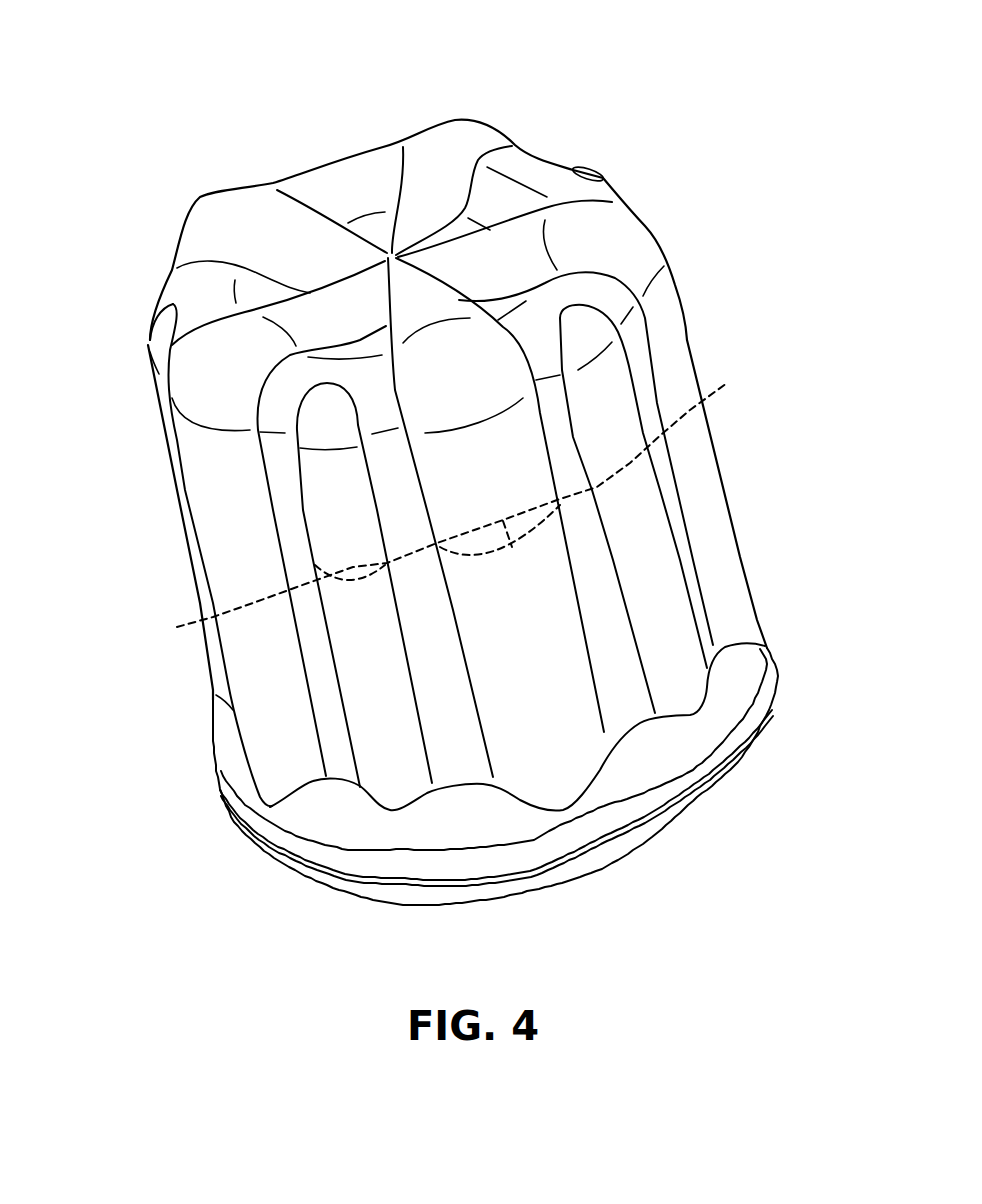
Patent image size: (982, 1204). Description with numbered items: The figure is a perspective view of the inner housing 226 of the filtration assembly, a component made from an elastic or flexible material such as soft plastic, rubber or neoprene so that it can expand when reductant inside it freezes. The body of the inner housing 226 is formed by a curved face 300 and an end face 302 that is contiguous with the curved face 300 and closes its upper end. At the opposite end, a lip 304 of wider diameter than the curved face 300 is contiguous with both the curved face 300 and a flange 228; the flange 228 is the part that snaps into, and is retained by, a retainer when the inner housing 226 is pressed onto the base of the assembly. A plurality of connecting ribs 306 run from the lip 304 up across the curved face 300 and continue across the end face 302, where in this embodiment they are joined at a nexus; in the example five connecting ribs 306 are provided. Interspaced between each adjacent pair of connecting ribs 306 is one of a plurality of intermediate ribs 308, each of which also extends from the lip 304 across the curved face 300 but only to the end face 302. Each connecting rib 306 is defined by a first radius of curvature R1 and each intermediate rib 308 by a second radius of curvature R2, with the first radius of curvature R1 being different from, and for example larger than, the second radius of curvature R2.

The inner housing 226 is at (624, 90).
The end face 302 is at (344, 183).
The connecting ribs 306 is at (197, 218).
The intermediate ribs 308 is at (320, 163).
The lip 304 is at (727, 690).
The curved face 300 is at (617, 647).
The flange 228 is at (614, 853).
The first radius of curvature R1 is at (468, 498).
The second radius of curvature R2 is at (260, 602).